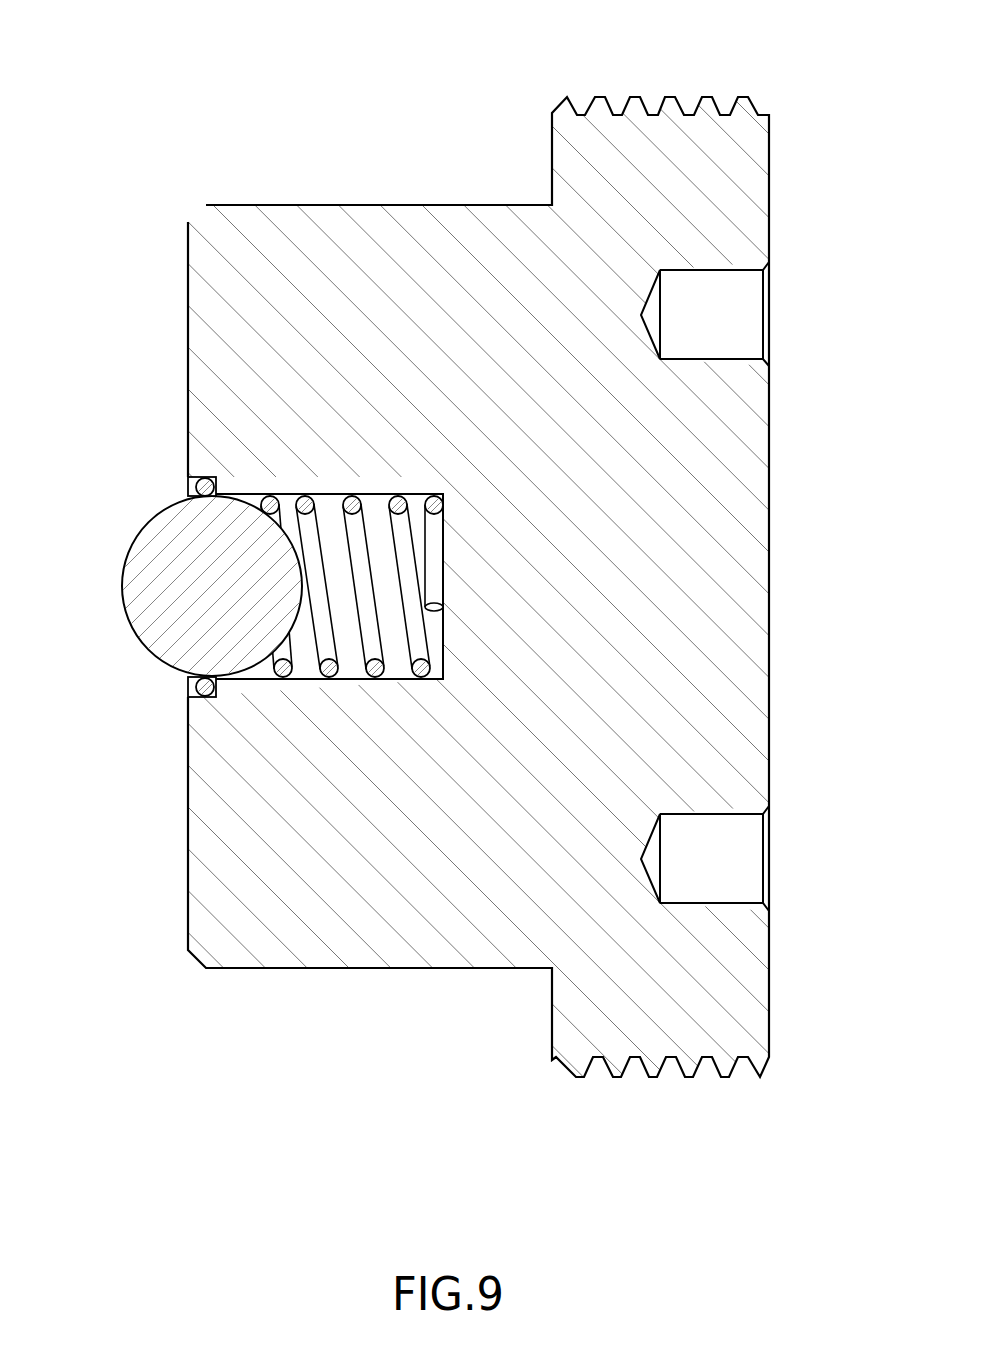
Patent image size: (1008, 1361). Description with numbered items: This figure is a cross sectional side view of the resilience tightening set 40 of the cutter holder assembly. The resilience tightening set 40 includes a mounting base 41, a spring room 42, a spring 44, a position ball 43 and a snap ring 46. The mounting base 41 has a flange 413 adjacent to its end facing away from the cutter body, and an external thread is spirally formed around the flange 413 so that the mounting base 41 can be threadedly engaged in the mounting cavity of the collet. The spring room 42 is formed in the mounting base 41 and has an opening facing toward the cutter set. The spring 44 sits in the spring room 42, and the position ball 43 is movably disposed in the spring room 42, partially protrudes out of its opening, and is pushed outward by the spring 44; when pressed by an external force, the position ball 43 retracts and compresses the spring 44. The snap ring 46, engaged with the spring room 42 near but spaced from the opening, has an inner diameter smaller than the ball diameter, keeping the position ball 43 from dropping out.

The resilience tightening set 40 is at (368, 85).
The mounting base 41 is at (504, 680).
The flange 413 is at (727, 149).
The spring room 42 is at (341, 678).
The position ball 43 is at (165, 586).
The spring 44 is at (352, 593).
The snap ring 46 is at (195, 484).